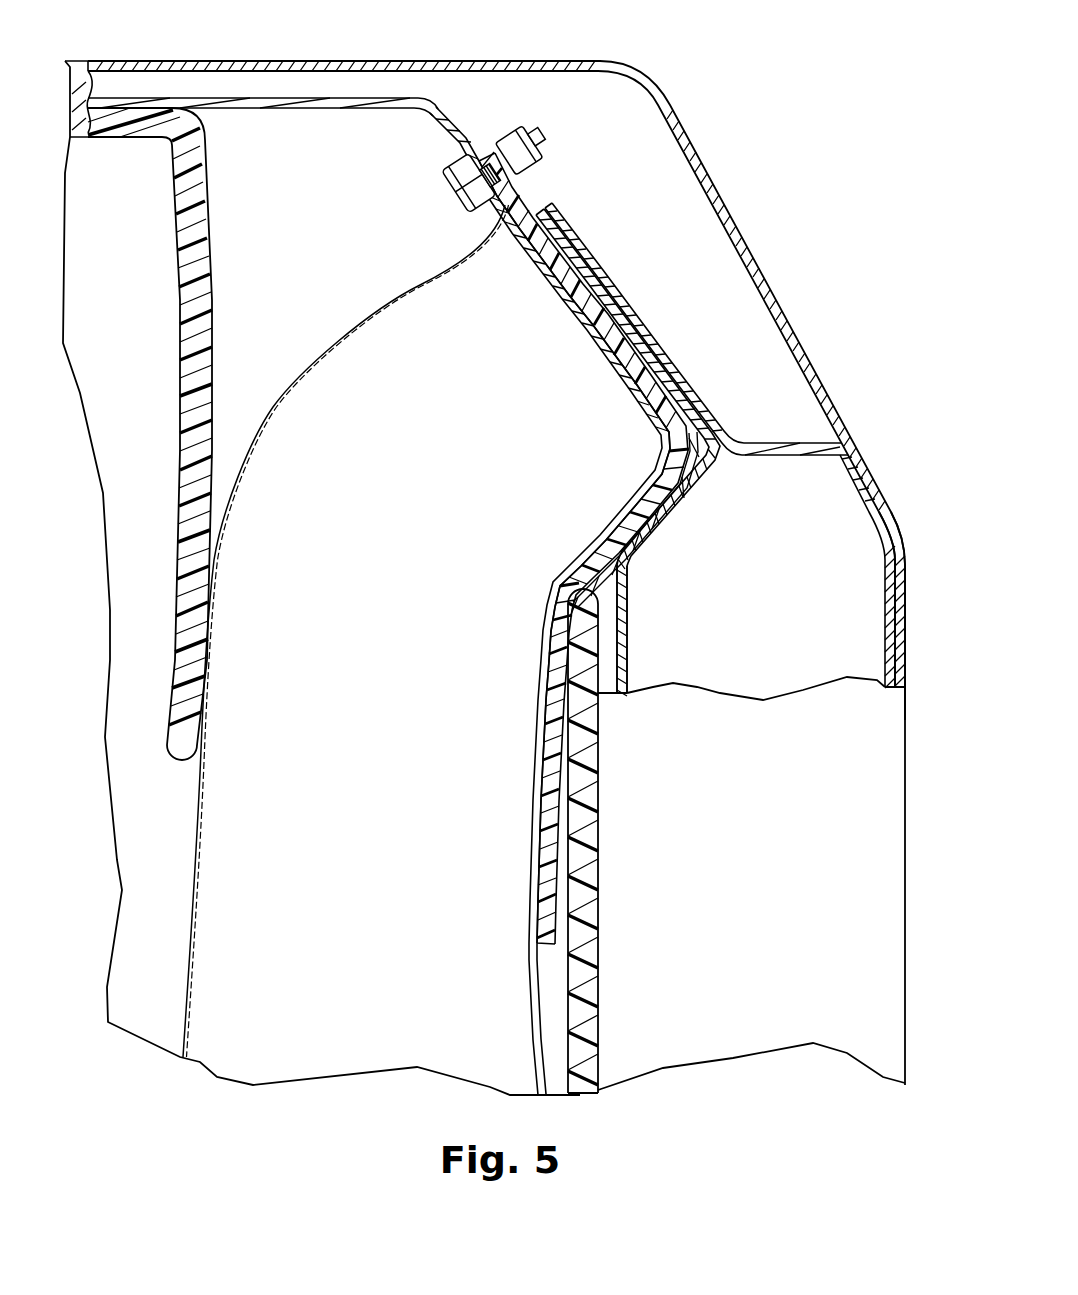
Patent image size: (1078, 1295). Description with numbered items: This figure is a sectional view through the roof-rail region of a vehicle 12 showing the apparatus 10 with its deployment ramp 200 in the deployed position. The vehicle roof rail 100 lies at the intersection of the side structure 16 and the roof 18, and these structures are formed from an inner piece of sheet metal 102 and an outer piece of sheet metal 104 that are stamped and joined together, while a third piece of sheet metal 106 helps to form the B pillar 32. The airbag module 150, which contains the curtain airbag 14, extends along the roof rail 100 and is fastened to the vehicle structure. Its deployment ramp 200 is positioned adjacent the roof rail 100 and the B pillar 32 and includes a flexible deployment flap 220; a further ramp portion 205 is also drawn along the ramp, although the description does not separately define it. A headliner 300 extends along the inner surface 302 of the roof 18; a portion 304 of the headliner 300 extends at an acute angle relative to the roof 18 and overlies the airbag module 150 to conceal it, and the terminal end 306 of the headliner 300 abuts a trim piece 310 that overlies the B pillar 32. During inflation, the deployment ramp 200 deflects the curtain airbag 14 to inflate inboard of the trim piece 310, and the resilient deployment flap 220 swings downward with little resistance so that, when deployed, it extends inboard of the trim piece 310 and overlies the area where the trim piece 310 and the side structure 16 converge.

The apparatus 10 is at (580, 212).
The vehicle 12 is at (381, 132).
The curtain airbag 14 is at (350, 327).
The side structure 16 is at (906, 532).
The roof 18 is at (85, 99).
The B pillar 32 is at (908, 664).
The vehicle roof rail 100 is at (523, 573).
The inner piece of sheet metal 102 is at (715, 452).
The outer piece of sheet metal 104 is at (900, 600).
The third piece of sheet metal 106 is at (622, 632).
The airbag module 150 is at (262, 331).
The deployment ramp 200 is at (563, 256).
The bracket flange 205 is at (643, 373).
The deployment flap 220 is at (539, 893).
The headliner 300 is at (150, 462).
The inner surface 302 is at (285, 118).
The portion 304 is at (197, 418).
The terminal end 306 is at (173, 748).
The trim piece 310 is at (580, 787).